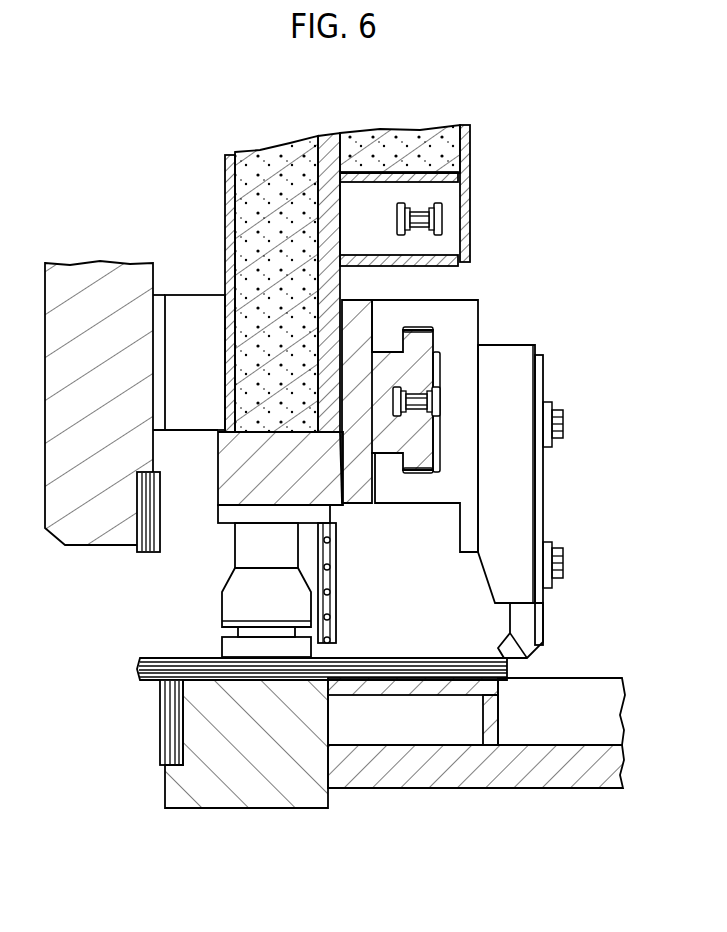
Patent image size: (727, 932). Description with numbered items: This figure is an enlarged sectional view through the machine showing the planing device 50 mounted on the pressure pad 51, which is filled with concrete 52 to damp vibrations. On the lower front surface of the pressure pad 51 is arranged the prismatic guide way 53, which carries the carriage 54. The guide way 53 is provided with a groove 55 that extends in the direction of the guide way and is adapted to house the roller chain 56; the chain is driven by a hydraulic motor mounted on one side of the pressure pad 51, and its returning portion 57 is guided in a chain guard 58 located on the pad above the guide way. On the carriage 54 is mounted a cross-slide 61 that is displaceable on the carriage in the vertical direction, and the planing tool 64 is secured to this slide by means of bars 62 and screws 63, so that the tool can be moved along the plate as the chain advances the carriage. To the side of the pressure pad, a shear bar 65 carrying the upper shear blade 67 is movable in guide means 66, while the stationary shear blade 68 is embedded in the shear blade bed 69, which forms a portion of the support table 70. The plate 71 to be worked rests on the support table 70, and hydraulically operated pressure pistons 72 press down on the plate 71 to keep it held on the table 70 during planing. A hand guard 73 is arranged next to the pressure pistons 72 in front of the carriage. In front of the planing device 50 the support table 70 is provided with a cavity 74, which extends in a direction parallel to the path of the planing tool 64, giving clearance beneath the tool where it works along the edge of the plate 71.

The planing device 50 is at (532, 292).
The pressure pad 51 is at (333, 138).
The concrete 52 is at (270, 160).
The prismatic guide way 53 is at (355, 500).
The carriage 54 is at (420, 495).
The groove 55 is at (418, 388).
The roller chain 56 is at (440, 400).
The returning portion of chain 57 is at (440, 213).
The chain guard 58 is at (448, 245).
The cross-slide 61 is at (498, 572).
The bars 62 is at (547, 540).
The screws 63 is at (565, 425).
The planing tool 64 is at (530, 622).
The shear bar 65 is at (92, 280).
The guide means 66 is at (188, 315).
The upper shear blade 67 is at (146, 548).
The stationary shear blade 68 is at (172, 731).
The shear blade bed 69 is at (238, 805).
The support table 70 is at (428, 775).
The plate 71 is at (422, 668).
The pressure pistons 72 is at (235, 647).
The hand guard 73 is at (338, 632).
The cavity 74 is at (583, 690).